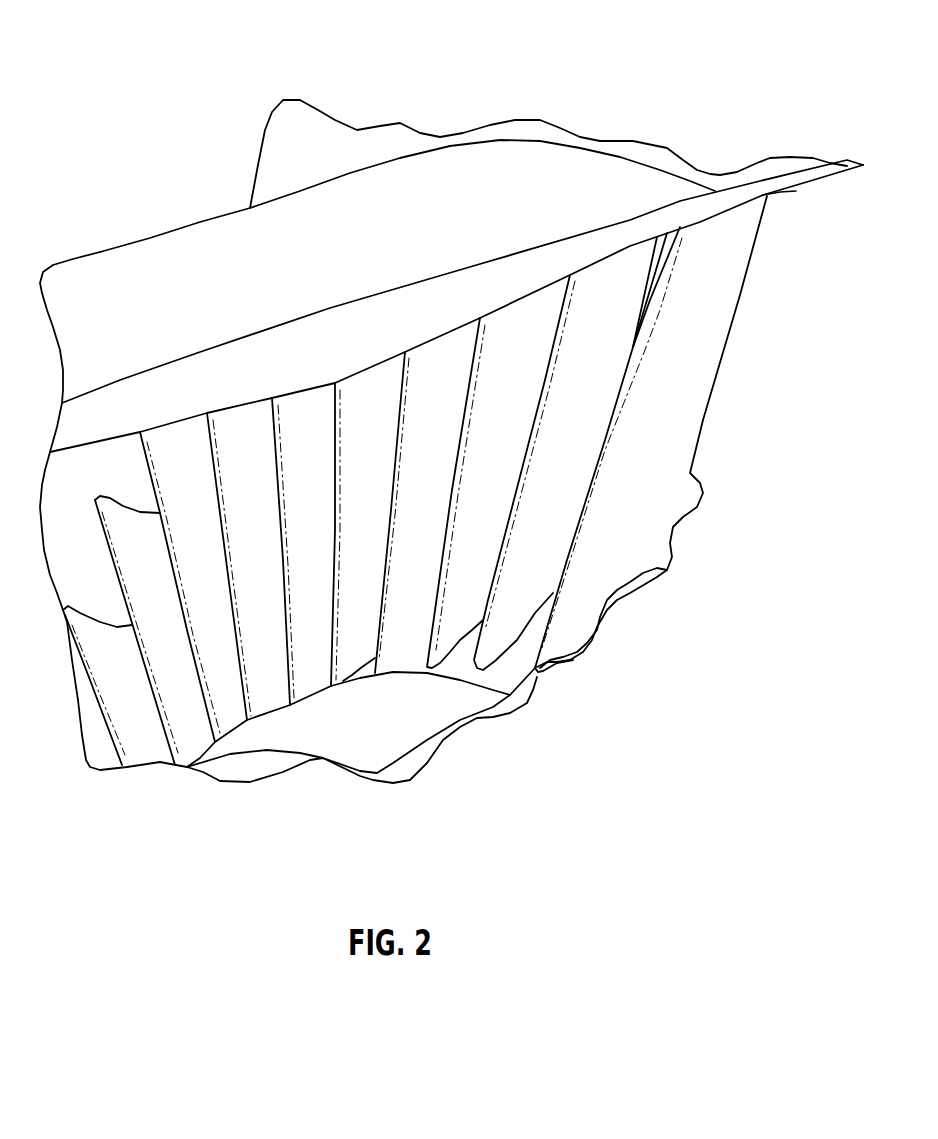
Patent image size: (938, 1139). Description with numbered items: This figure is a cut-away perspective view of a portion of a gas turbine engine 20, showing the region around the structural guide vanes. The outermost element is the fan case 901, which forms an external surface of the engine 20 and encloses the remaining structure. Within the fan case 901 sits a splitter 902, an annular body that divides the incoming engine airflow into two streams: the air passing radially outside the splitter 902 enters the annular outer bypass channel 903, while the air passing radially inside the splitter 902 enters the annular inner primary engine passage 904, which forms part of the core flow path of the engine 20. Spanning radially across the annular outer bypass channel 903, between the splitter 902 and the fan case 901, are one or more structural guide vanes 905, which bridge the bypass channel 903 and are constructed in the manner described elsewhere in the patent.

The engine 20 is at (148, 59).
The fan case 901 is at (133, 257).
The splitter 902 is at (328, 758).
The annular outer bypass channel 903 is at (259, 630).
The annular inner primary engine passage 904 is at (250, 764).
The structural guide vanes 905 is at (703, 320).